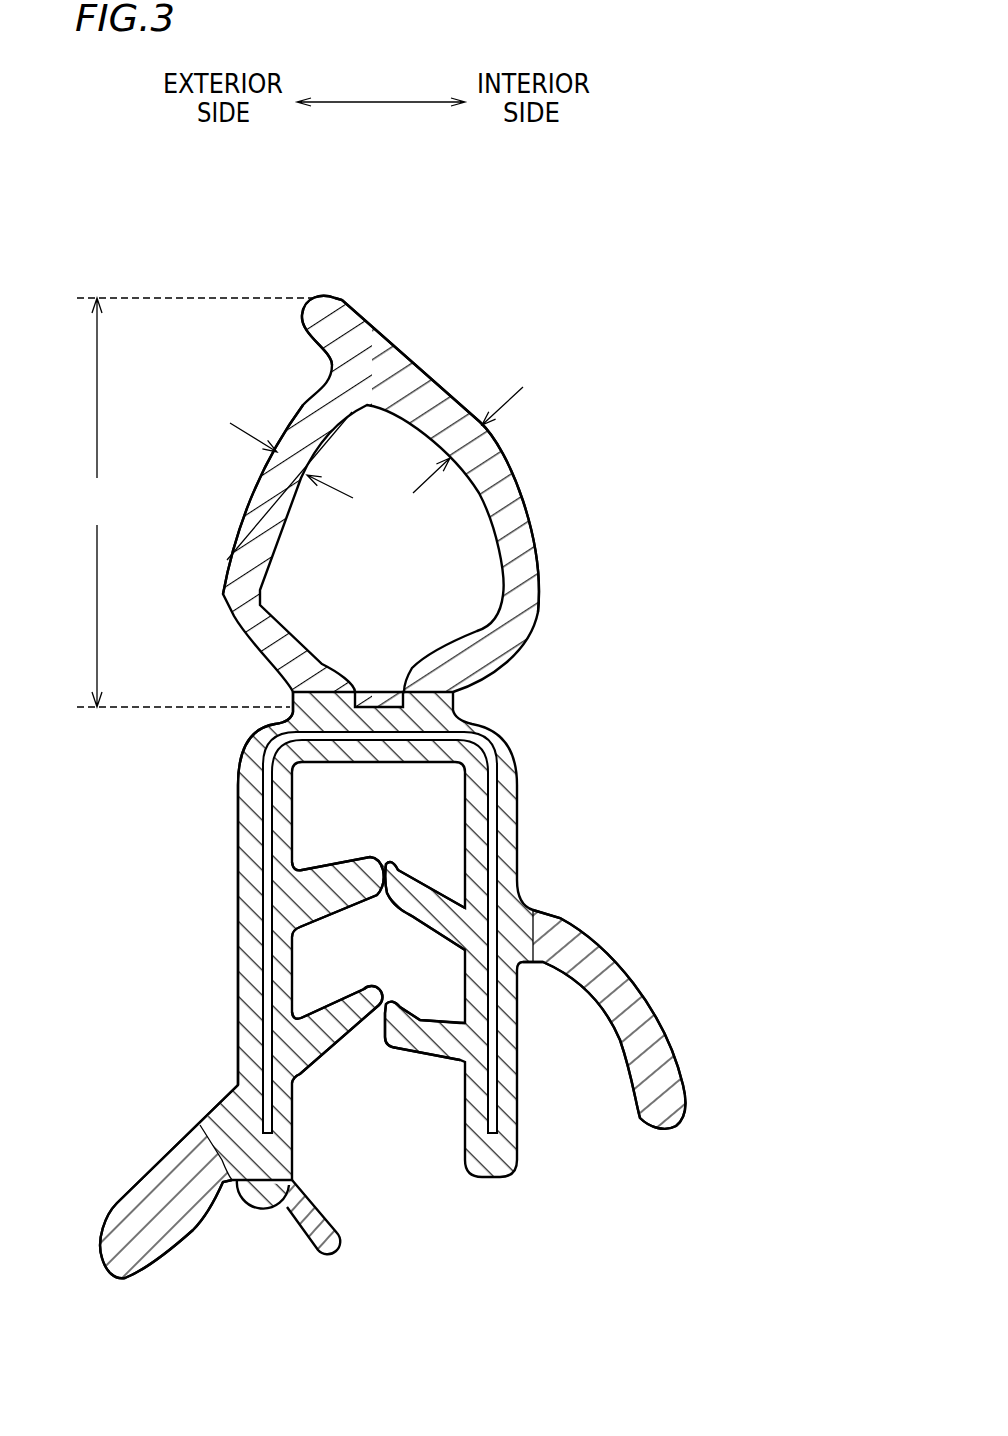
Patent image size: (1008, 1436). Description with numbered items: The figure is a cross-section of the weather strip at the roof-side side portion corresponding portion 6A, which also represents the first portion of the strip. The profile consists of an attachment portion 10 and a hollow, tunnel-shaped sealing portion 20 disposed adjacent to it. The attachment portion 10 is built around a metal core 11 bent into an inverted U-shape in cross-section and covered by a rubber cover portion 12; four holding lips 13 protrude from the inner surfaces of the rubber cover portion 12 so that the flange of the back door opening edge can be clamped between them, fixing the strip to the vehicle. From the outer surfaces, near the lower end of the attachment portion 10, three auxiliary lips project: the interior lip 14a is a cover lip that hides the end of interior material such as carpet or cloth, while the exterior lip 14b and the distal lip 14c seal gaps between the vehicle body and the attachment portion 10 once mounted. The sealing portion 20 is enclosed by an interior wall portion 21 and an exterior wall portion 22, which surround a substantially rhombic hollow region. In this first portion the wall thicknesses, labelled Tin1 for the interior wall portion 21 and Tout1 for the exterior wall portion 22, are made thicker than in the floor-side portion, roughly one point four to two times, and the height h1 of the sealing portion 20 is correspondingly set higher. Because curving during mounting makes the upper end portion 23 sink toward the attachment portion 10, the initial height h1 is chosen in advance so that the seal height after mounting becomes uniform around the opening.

The roof-side side portion corresponding portion 6A is at (712, 300).
The attachment portion 10 is at (540, 829).
The core 11 is at (267, 933).
The rubber cover portion 12 is at (250, 877).
The holding lips 13 is at (415, 1022).
The interior lip 14a is at (633, 1053).
The exterior lip 14b is at (148, 1262).
The distal lip 14c is at (290, 1227).
The sealing portion 20 is at (560, 542).
The interior wall portion 21 is at (495, 470).
The exterior wall portion 22 is at (263, 527).
The upper end portion 23 is at (342, 322).
The height h1 is at (96, 502).
The wall thickness Tin1 is at (493, 422).
The wall thickness Tout1 is at (246, 451).